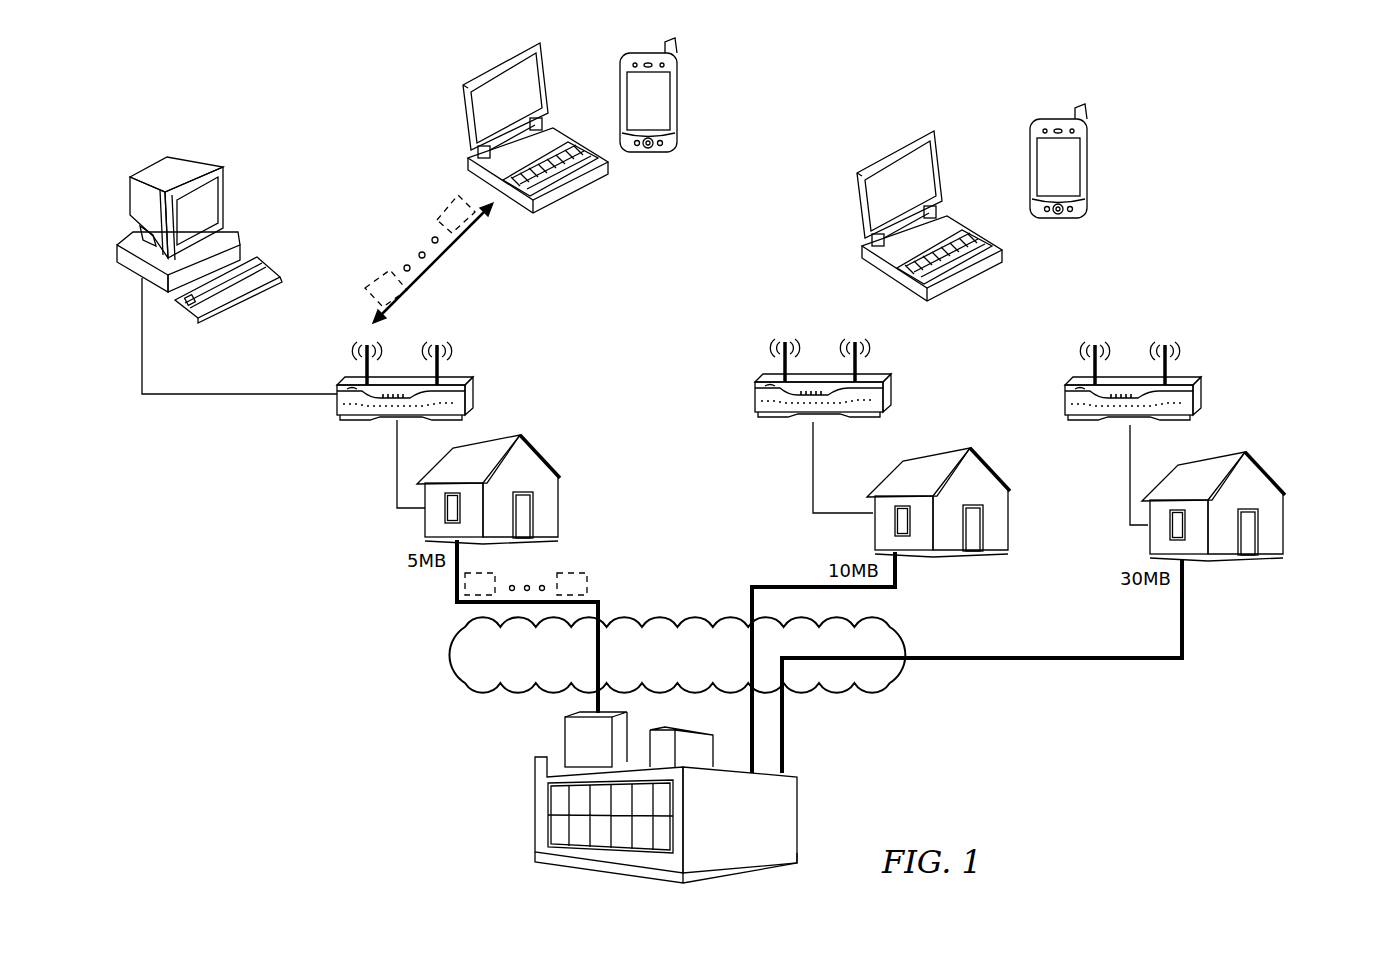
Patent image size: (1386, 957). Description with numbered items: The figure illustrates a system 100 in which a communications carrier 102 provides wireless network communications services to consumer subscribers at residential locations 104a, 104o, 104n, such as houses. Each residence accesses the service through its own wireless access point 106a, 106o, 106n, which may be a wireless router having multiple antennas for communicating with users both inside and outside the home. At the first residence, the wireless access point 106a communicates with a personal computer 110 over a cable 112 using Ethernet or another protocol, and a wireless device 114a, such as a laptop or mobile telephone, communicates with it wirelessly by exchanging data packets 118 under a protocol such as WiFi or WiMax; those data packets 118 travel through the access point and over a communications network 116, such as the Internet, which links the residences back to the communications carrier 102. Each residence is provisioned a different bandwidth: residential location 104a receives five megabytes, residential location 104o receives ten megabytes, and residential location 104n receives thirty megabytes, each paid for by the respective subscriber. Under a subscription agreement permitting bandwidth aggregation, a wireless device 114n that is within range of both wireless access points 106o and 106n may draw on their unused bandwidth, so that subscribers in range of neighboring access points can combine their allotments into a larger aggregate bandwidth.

The system 100 is at (751, 95).
The communications carrier 102 is at (797, 805).
The residential location 104a is at (558, 508).
The residential location 104o is at (1007, 523).
The residential location 104n is at (1283, 527).
The wireless access point 106a is at (473, 398).
The wireless access point 106o is at (755, 406).
The wireless access point 106n is at (1202, 400).
The personal computer 110 is at (155, 162).
The cable 112 is at (204, 392).
The wireless device 114a is at (436, 115).
The wireless device 114n is at (1092, 241).
The communications network 116 is at (522, 691).
The data packets 118 is at (377, 262).